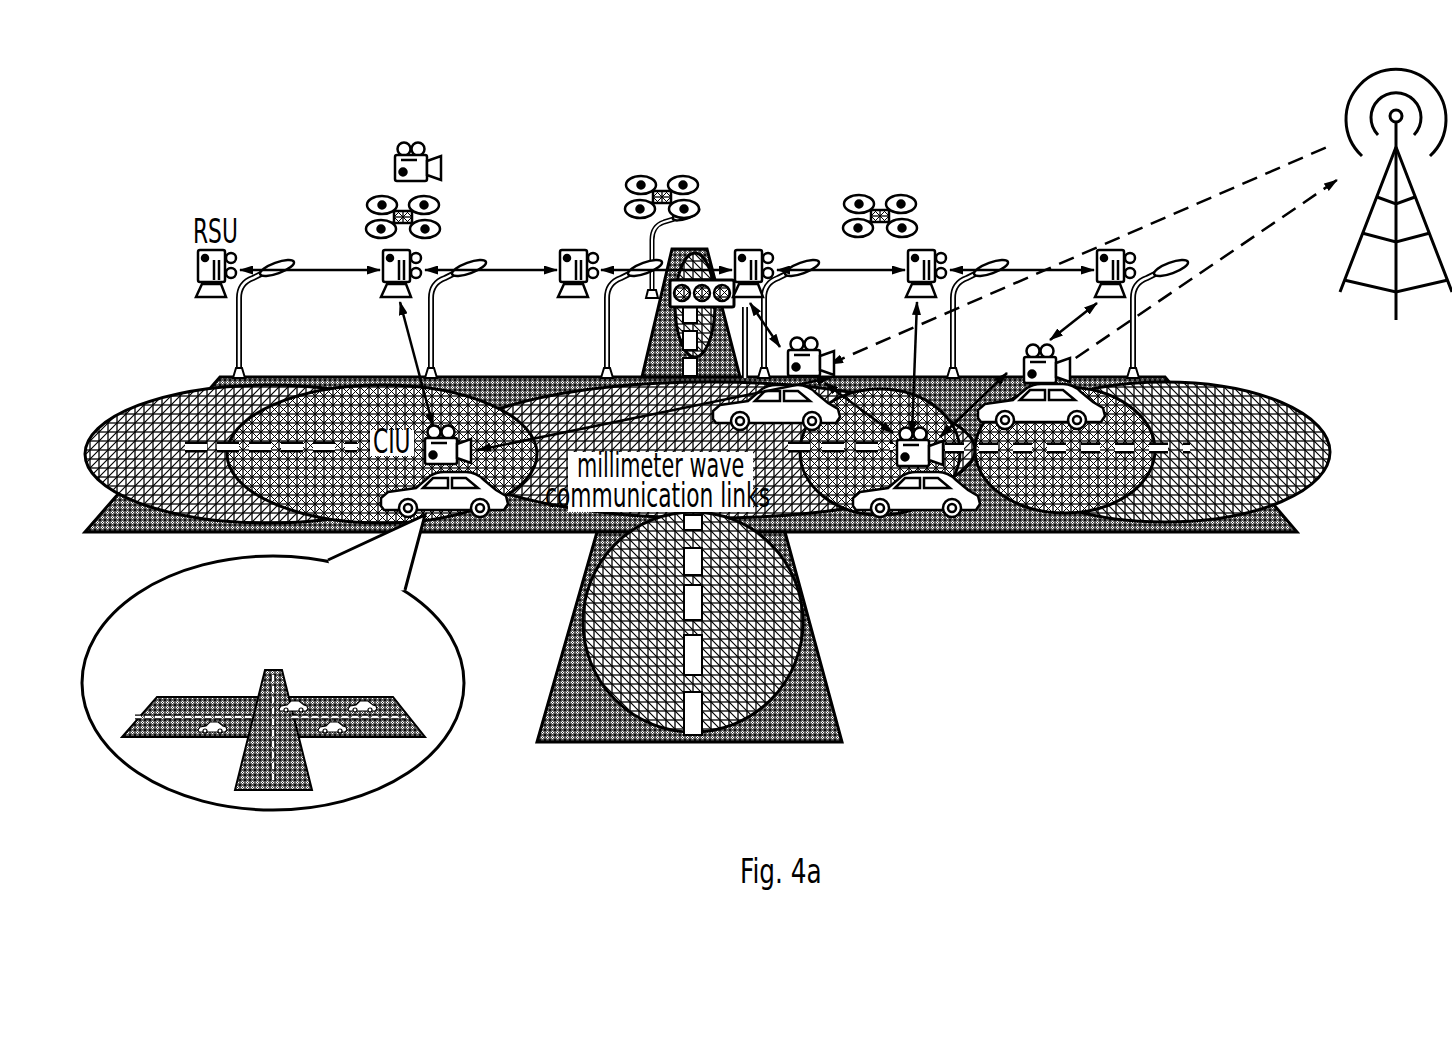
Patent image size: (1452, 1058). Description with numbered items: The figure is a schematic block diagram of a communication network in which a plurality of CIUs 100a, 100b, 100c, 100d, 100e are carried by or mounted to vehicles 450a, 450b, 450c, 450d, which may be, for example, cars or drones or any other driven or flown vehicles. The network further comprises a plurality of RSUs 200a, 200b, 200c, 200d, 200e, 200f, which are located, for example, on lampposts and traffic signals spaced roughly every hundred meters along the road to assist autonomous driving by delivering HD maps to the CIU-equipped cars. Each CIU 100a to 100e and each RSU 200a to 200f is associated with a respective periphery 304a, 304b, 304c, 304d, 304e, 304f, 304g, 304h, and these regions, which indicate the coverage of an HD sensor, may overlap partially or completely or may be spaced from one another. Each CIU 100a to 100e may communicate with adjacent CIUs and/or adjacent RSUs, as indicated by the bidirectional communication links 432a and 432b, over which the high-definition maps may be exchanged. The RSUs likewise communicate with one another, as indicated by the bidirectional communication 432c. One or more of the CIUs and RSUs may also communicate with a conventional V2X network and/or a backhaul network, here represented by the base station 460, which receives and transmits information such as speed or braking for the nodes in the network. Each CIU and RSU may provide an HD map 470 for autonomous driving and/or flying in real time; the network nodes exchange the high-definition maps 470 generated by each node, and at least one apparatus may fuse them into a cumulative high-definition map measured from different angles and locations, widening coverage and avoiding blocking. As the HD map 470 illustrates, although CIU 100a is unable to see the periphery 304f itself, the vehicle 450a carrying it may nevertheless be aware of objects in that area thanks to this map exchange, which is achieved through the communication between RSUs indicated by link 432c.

The CIU 100a is at (448, 427).
The CIU 100b is at (812, 336).
The CIU 100c is at (893, 428).
The CIU 100d is at (1036, 342).
The CIU 100e is at (413, 138).
The RSU 200a is at (252, 246).
The RSU 200b is at (447, 250).
The RSU 200c is at (598, 245).
The RSU 200d is at (770, 245).
The RSU 200e is at (940, 230).
The RSU 200f is at (1108, 233).
The periphery 304a is at (124, 410).
The periphery 304b is at (352, 386).
The periphery 304c is at (557, 522).
The periphery 304d is at (823, 515).
The periphery 304e is at (985, 513).
The periphery 304f is at (1308, 487).
The periphery 304g is at (695, 253).
The periphery 304h is at (645, 732).
The bidirectional communication link 432a is at (406, 328).
The bidirectional communication link 432b is at (571, 430).
The bidirectional communication 432c is at (300, 268).
The vehicle 450a is at (435, 517).
The vehicle 450b is at (923, 515).
The vehicle 450c is at (1042, 427).
The vehicle 450d is at (382, 177).
The cellular base station 460 is at (1357, 203).
The HD map 470 is at (273, 812).